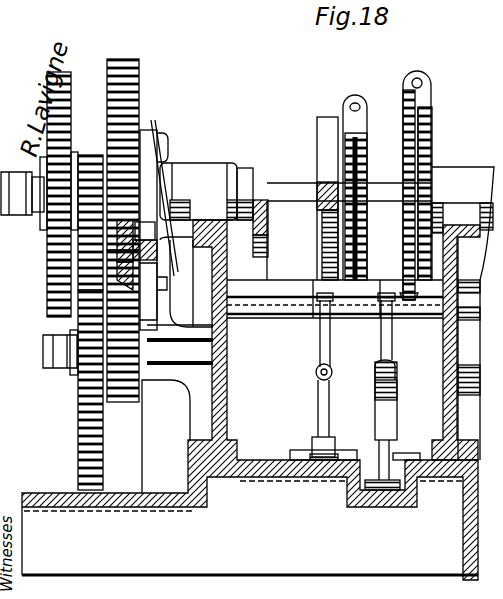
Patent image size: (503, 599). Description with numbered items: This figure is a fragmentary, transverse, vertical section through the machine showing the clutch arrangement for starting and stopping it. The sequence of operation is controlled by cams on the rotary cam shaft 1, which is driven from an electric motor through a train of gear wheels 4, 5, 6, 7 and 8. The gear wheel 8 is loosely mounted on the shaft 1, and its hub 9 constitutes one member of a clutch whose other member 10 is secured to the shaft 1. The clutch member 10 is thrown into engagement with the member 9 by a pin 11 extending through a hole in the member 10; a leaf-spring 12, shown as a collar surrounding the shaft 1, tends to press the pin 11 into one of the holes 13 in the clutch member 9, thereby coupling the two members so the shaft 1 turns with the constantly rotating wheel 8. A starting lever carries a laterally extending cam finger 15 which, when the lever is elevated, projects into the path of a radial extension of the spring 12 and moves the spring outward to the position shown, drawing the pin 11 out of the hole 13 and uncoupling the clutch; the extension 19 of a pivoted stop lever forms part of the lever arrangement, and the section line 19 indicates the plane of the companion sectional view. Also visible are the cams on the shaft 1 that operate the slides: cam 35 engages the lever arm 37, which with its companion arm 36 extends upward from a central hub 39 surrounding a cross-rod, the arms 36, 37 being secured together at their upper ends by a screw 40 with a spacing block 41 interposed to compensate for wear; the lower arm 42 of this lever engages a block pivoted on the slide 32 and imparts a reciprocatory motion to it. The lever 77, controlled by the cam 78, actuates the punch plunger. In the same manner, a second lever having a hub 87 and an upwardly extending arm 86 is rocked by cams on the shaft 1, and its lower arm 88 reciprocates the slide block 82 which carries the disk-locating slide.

The cam shaft 1 is at (282, 190).
The gear wheel 4 is at (71, 103).
The gear wheel 5 is at (90, 155).
The gear wheel 6 is at (78, 405).
The gear wheel 7 is at (122, 402).
The gear wheel 8 is at (139, 103).
The clutch member 9 is at (163, 203).
The clutch member 10 is at (157, 132).
The pin 11 is at (138, 276).
The leaf-spring 12 is at (186, 200).
The holes 13 is at (113, 268).
The cam finger 15 is at (170, 268).
The extension of stop lever 19 is at (167, 130).
The slide 32 is at (388, 490).
The cam 35 is at (432, 170).
The lever arm 36 is at (403, 115).
The lever arm 37 is at (432, 119).
The hub 39 is at (417, 313).
The screw 40 is at (421, 83).
The spacing block 41 is at (378, 415).
The lever arm 42 is at (393, 362).
The lever 77 is at (322, 232).
The cam 78 is at (368, 187).
The slide block 82 is at (320, 467).
The lever arm 86 is at (346, 123).
The hub 87 is at (350, 308).
The lever arm 88 is at (336, 358).